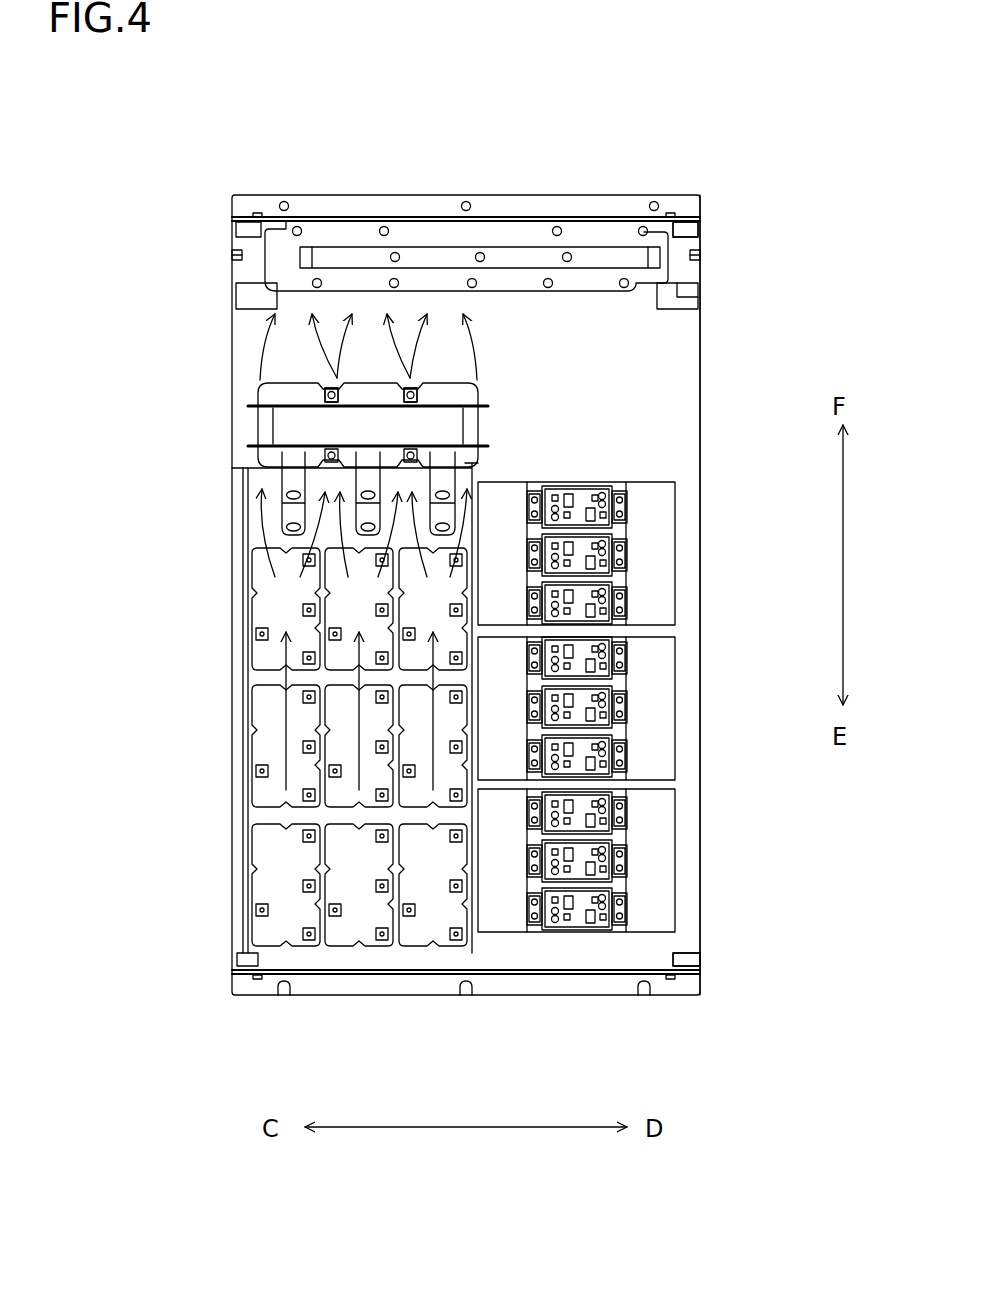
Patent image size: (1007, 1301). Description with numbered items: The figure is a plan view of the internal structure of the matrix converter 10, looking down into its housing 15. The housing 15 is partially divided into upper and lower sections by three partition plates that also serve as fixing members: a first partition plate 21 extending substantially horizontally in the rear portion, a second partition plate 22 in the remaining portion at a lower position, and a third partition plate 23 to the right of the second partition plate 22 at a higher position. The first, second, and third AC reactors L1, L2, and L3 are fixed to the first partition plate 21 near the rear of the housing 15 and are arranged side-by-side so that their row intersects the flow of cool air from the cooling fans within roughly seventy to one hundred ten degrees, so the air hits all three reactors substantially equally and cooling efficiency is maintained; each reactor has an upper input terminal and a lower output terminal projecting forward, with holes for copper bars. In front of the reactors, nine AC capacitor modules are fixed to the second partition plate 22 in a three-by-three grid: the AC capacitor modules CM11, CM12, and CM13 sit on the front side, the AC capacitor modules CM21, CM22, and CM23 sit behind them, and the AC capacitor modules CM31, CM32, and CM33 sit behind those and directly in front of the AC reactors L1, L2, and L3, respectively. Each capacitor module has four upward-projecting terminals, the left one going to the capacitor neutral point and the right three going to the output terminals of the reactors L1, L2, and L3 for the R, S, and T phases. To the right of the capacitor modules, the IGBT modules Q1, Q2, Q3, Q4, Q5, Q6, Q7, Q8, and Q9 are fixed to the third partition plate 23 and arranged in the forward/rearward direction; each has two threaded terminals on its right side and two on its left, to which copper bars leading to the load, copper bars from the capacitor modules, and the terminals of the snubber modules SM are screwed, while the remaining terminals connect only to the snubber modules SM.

The matrix converter 10 is at (175, 137).
The housing 15 is at (700, 323).
The first partition plate 21 is at (680, 375).
The second partition plate 22 is at (255, 678).
The third partition plate 23 is at (698, 912).
The snubber module SM is at (498, 498).
The first AC reactor L1 is at (275, 395).
The second AC reactor L2 is at (360, 397).
The third AC reactor L3 is at (433, 397).
The AC capacitor module CM11 is at (272, 940).
The AC capacitor module CM12 is at (345, 940).
The AC capacitor module CM13 is at (417, 940).
The AC capacitor module CM21 is at (278, 792).
The AC capacitor module CM22 is at (350, 750).
The AC capacitor module CM23 is at (422, 725).
The AC capacitor module CM31 is at (268, 655).
The AC capacitor module CM32 is at (347, 595).
The AC capacitor module CM33 is at (415, 582).
The IGBT module Q1 is at (600, 903).
The IGBT module Q2 is at (600, 855).
The IGBT module Q3 is at (600, 808).
The IGBT module Q4 is at (600, 752).
The IGBT module Q5 is at (600, 703).
The IGBT module Q6 is at (600, 652).
The IGBT module Q7 is at (600, 603).
The IGBT module Q8 is at (600, 553).
The IGBT module Q9 is at (600, 503).